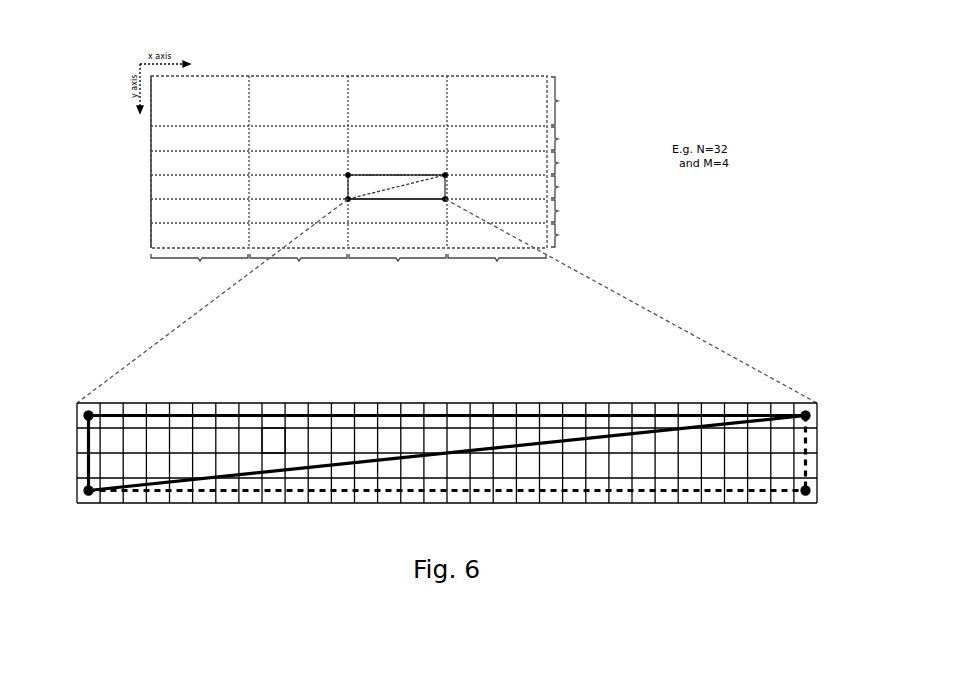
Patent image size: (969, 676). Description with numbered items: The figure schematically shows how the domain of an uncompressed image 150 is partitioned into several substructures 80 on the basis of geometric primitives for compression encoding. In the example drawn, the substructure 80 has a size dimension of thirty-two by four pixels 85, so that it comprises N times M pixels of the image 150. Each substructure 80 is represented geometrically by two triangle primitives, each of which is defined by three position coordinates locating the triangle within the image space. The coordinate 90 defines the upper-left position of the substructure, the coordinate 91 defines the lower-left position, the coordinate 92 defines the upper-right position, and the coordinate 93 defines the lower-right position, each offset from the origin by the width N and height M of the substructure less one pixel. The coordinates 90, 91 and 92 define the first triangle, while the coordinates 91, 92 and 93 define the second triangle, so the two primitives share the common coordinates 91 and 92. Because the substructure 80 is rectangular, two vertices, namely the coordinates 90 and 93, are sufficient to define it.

The image 150 is at (500, 48).
The substructure 80 is at (466, 390).
The pixel 85 is at (273, 438).
The coordinate 90 is at (84, 416).
The coordinate 91 is at (84, 490).
The coordinate 92 is at (810, 416).
The coordinate 93 is at (810, 490).